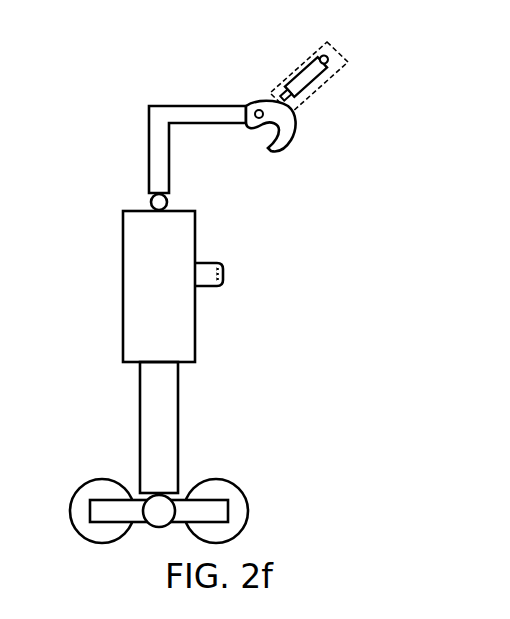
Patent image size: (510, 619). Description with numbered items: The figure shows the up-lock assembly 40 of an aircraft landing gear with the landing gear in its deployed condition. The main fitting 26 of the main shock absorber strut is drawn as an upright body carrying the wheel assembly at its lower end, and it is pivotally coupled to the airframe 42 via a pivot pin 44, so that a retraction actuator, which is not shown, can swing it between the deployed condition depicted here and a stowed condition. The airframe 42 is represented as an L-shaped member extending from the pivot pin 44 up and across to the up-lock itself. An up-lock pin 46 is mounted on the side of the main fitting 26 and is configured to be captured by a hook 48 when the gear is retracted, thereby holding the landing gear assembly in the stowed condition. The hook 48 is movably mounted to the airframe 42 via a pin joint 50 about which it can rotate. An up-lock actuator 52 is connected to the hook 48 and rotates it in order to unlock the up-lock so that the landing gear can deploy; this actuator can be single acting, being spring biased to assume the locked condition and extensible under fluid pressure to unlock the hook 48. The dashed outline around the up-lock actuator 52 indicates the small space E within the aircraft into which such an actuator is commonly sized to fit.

The main fitting 26 is at (122, 291).
The up-lock assembly 40 is at (231, 122).
The airframe 42 is at (148, 153).
The pivot pin 44 is at (151, 200).
The up-lock pin 46 is at (225, 274).
The hook 48 is at (300, 125).
The pin joint 50 is at (257, 109).
The up-lock actuator 52 is at (308, 79).
The small space E is at (313, 56).